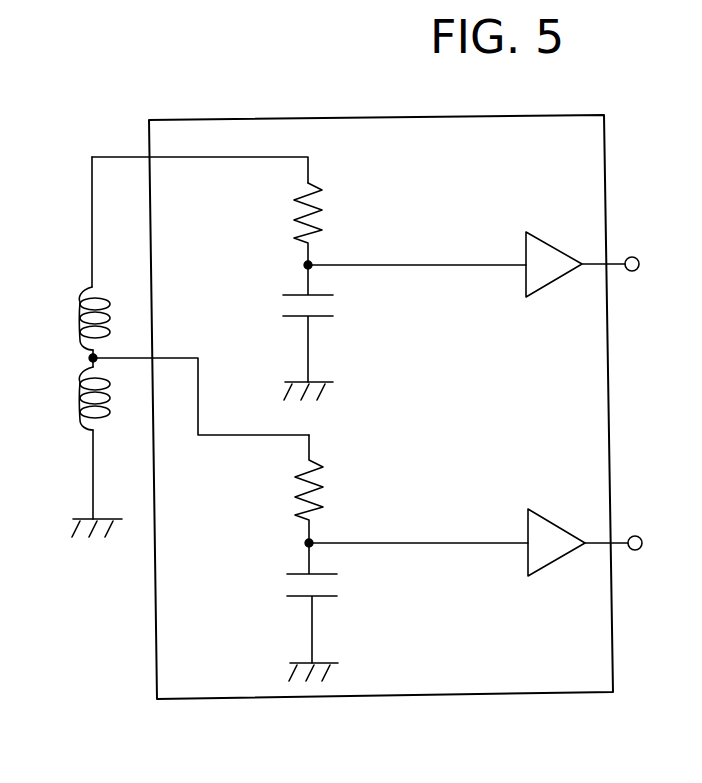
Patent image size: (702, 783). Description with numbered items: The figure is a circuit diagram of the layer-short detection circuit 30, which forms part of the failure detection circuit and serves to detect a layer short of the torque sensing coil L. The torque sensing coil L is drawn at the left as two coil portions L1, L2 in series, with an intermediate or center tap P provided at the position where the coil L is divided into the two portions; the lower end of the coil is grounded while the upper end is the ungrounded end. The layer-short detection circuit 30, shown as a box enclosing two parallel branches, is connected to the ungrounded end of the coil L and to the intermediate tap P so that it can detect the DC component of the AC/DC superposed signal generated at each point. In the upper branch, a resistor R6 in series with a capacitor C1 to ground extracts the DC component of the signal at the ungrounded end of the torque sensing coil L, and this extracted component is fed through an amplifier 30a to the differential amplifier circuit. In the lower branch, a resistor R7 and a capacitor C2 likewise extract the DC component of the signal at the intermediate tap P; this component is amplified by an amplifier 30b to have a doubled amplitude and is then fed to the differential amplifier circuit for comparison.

The layer-short detection circuit 30 is at (364, 119).
The amplifier 30a is at (543, 237).
The amplifier 30b is at (547, 512).
The torque sensing coil L is at (71, 389).
The coil portion L1 is at (78, 318).
The coil portion L2 is at (78, 398).
The intermediate tap P is at (90, 358).
The resistor R6 is at (290, 224).
The resistor R7 is at (290, 489).
The capacitor C1 is at (291, 332).
The capacitor C2 is at (297, 612).